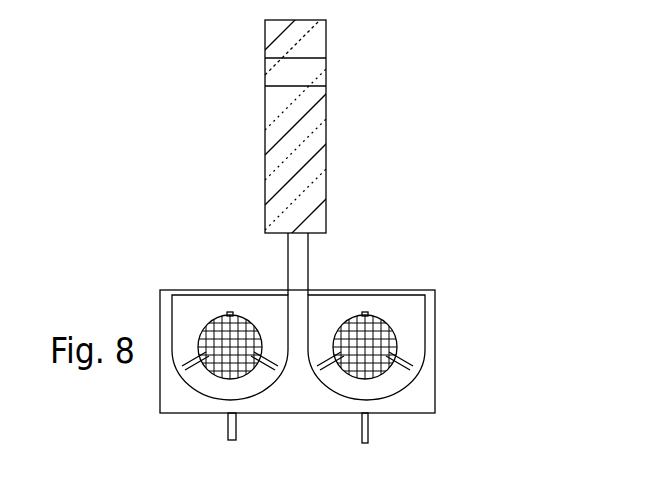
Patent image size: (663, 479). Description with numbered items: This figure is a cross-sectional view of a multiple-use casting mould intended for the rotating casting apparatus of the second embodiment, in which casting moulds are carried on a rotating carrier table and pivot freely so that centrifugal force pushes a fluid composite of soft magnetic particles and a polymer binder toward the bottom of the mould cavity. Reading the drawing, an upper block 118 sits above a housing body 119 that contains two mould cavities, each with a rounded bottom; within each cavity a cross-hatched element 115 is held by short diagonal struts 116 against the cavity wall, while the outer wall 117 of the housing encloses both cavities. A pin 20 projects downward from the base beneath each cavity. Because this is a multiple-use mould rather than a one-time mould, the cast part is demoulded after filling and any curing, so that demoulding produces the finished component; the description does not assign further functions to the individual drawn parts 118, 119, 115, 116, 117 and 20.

The magnet/handle block 118 is at (327, 119).
The housing body 119 is at (331, 303).
The cylindrical element 115 is at (377, 328).
The support struts 116 is at (415, 367).
The outer wall 117 is at (437, 376).
The pin 20 is at (371, 433).